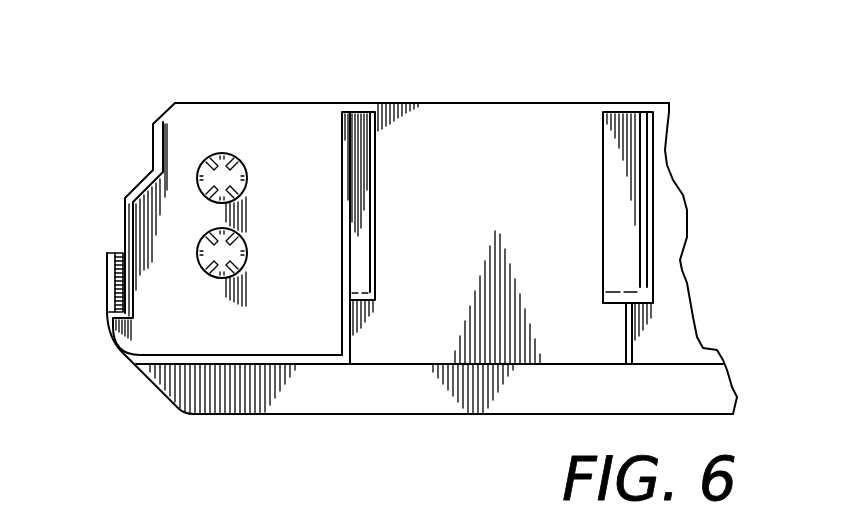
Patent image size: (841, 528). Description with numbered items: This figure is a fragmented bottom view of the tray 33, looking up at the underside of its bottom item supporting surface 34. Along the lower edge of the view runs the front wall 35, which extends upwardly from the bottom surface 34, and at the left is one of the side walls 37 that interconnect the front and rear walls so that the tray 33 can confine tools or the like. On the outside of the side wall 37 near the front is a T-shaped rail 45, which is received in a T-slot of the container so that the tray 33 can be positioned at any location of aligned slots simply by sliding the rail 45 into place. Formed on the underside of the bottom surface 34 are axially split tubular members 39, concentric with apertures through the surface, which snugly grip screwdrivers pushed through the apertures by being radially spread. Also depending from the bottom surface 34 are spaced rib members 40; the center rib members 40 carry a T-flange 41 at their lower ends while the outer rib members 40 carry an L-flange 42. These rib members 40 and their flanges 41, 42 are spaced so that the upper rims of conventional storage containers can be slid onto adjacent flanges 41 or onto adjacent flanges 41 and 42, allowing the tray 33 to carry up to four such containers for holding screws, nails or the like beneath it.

The tray 33 is at (678, 125).
The bottom item supporting surface 34 is at (467, 132).
The front wall 35 is at (425, 402).
The side walls 37 is at (127, 208).
The axially split tubular members 39 is at (222, 153).
The rib members 40 is at (352, 333).
The T-flange 41 is at (628, 128).
The L-flange 42 is at (355, 133).
The T-shaped rail 45 is at (108, 292).